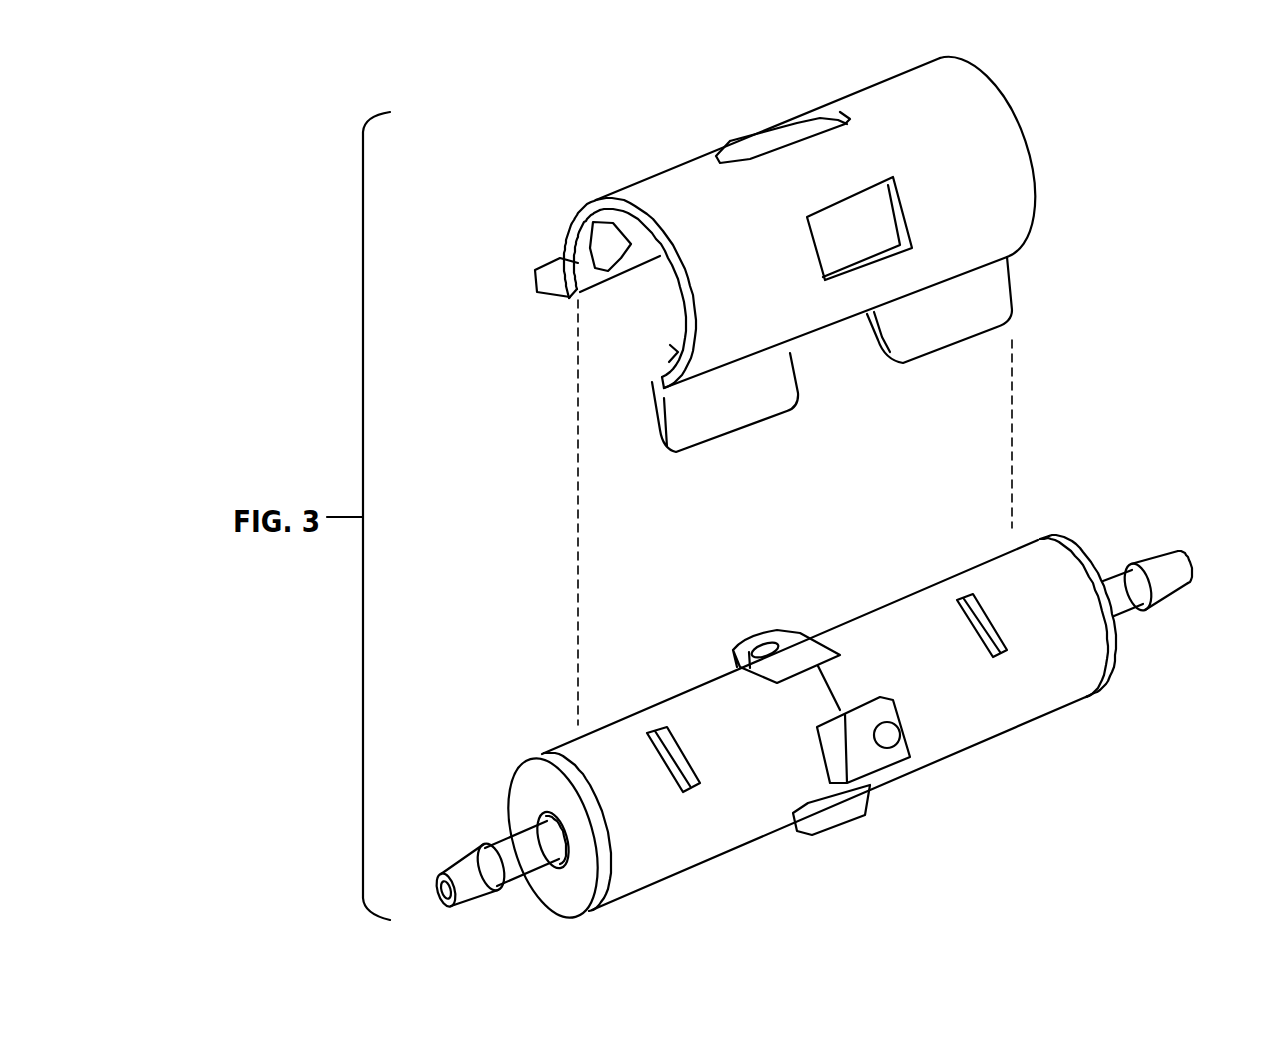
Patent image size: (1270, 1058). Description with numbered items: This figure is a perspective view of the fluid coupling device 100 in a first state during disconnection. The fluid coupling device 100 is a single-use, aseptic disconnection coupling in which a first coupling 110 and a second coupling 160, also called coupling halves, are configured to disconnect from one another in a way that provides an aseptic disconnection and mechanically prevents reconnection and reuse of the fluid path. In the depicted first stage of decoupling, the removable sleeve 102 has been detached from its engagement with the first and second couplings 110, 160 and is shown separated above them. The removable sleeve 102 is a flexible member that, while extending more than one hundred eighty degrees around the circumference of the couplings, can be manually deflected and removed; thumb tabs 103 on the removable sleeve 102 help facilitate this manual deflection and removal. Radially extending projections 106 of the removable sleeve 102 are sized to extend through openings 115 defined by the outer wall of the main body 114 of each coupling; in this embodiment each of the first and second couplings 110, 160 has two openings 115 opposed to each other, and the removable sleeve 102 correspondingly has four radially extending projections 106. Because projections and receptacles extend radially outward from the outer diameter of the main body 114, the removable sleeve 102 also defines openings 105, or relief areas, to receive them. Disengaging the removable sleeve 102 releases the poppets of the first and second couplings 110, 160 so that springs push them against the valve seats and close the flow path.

The fluid coupling device 100 is at (1157, 113).
The removable sleeve 102 is at (734, 90).
The thumb tab 103 is at (534, 280).
The opening 105 is at (716, 156).
The radially extending projection 106 is at (593, 278).
The first coupling 110 is at (684, 908).
The main body 114 is at (706, 830).
The opening 115 is at (683, 747).
The second coupling 160 is at (1050, 756).